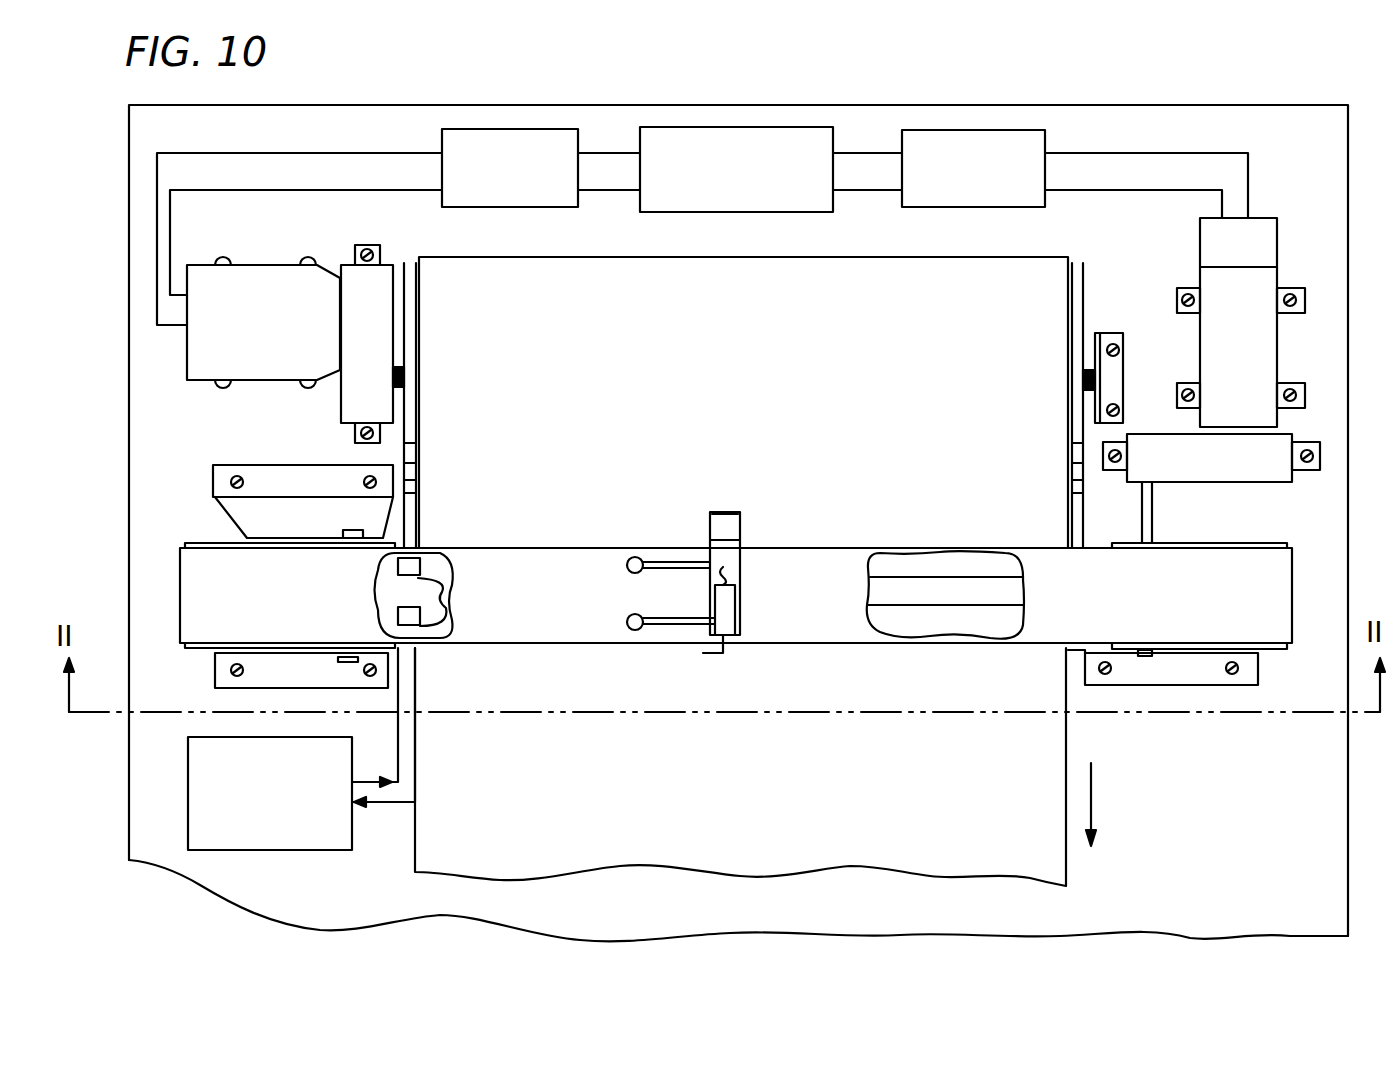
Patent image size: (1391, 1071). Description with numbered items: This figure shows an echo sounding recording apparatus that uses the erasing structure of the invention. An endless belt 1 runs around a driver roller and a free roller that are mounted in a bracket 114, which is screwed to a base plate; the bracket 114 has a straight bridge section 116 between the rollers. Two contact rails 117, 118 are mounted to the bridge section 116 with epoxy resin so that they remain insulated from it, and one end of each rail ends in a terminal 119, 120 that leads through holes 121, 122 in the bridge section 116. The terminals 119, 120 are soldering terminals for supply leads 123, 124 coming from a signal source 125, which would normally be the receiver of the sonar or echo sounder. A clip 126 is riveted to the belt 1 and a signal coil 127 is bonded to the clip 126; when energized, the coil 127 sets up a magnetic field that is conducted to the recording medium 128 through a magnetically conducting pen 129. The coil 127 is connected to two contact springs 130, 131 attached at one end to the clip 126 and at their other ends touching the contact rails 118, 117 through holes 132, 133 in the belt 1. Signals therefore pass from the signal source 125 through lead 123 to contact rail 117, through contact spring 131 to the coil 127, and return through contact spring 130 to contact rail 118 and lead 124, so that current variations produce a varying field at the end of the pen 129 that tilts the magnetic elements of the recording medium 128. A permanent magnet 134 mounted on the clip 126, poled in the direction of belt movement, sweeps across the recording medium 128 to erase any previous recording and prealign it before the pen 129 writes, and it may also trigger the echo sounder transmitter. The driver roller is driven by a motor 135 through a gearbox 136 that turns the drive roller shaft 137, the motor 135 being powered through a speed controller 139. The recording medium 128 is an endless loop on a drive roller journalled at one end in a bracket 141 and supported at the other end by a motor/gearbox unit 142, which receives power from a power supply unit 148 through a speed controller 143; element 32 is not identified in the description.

The endless belt 1 is at (1048, 562).
The transducer unit 32 is at (266, 276).
The bracket 114 is at (275, 473).
The bridge section 116 is at (900, 587).
The contact rail 117 is at (948, 583).
The contact rail 118 is at (962, 620).
The terminal 119 is at (455, 591).
The terminal 120 is at (425, 628).
The hole 121 is at (403, 556).
The hole 122 is at (420, 598).
The supply lead 123 is at (400, 742).
The supply lead 124 is at (417, 778).
The signal source 125 is at (300, 853).
The clip 126 is at (732, 557).
The signal coil 127 is at (727, 604).
The recording medium 128 is at (1011, 268).
The pen 129 is at (712, 657).
The contact spring 130 is at (672, 625).
The contact spring 131 is at (683, 562).
The hole 132 is at (632, 633).
The hole 133 is at (625, 558).
The permanent magnet 134 is at (724, 522).
The motor 135 is at (1226, 403).
The gearbox 136 is at (1205, 474).
The drive roller shaft 137 is at (1146, 518).
The speed controller 139 is at (980, 208).
The bracket 141 is at (1153, 305).
The motor/gearbox unit 142 is at (388, 348).
The speed controller 143 is at (532, 209).
The power supply unit 148 is at (755, 213).